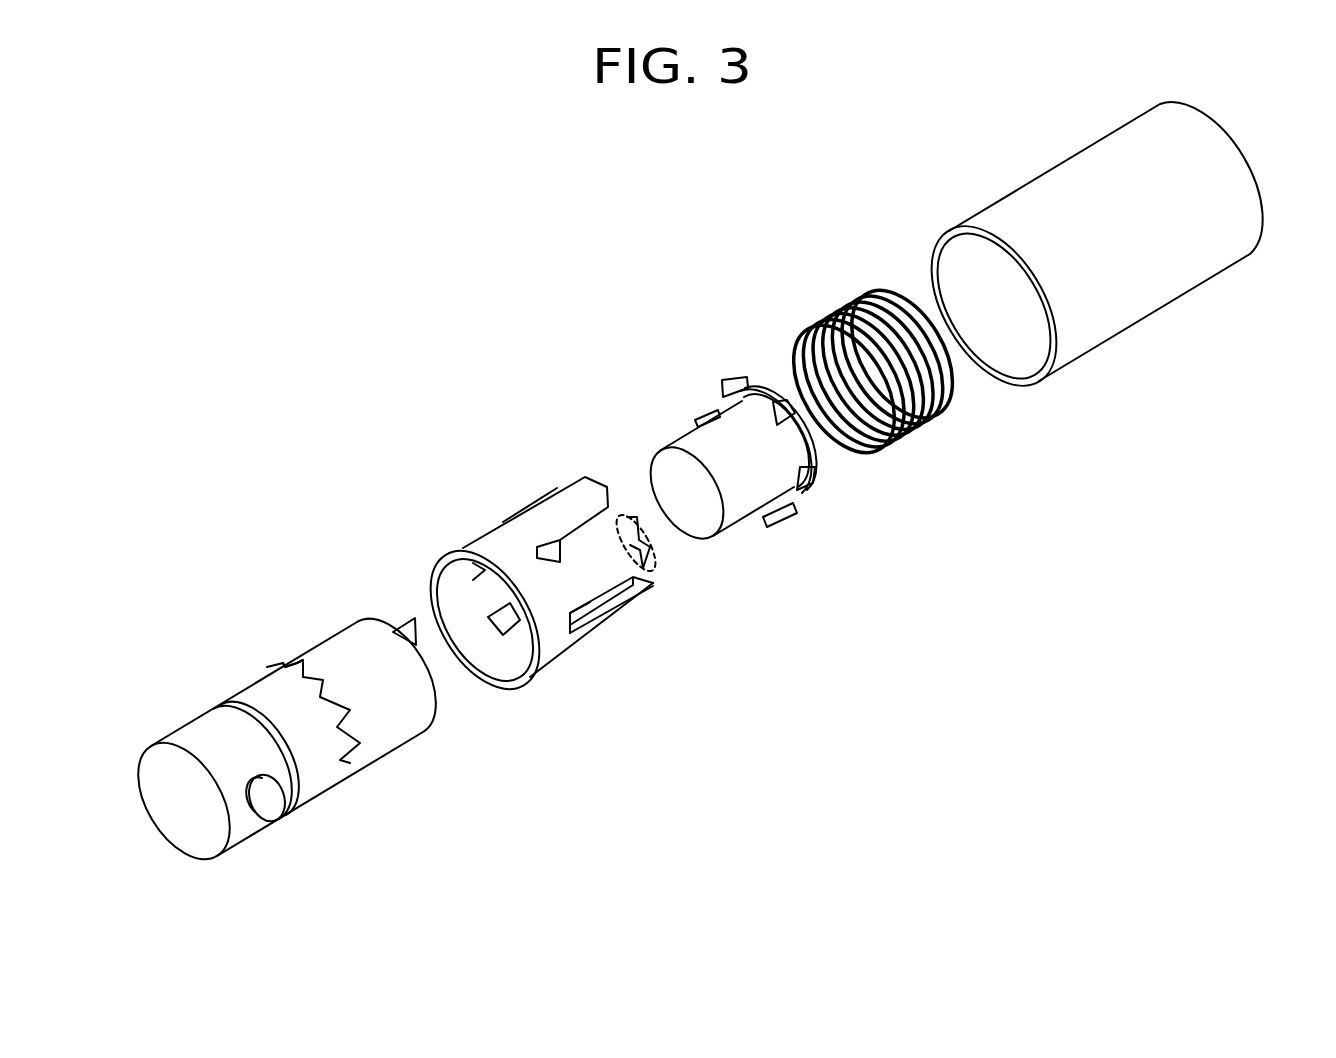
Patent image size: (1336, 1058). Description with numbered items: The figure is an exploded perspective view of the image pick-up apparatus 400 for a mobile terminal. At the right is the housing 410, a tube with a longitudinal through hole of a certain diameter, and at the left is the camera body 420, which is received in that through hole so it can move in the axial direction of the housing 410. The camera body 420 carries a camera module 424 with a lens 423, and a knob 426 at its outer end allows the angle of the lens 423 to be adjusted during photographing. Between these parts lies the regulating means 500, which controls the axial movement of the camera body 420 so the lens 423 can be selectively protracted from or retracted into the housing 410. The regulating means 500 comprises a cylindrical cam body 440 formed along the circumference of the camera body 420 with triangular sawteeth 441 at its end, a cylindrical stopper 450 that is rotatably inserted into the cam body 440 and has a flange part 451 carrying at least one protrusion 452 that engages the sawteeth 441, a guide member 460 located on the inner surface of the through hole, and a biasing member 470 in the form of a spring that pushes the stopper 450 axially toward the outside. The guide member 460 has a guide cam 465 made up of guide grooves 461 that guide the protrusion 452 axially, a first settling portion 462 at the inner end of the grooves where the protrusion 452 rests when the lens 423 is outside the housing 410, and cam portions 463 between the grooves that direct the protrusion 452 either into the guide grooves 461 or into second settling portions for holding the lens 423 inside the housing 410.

The image pick-up apparatus 400 is at (930, 663).
The housing 410 is at (1150, 292).
The camera body 420 is at (277, 645).
The lens 423 is at (260, 797).
The camera module 424 is at (410, 627).
The knob 426 is at (178, 743).
The cam body 440 is at (310, 576).
The sawteeth 441 is at (299, 663).
The stopper 450 is at (684, 431).
The flange part 451 is at (820, 462).
The protrusion 452 is at (808, 488).
The guide member 460 is at (570, 551).
The guide grooves 461 is at (637, 600).
The first settling portion 462 is at (593, 608).
The cam portions 463 is at (655, 572).
The guide cam 465 is at (660, 631).
The biasing member 470 is at (796, 311).
The regulating means 500 is at (627, 208).